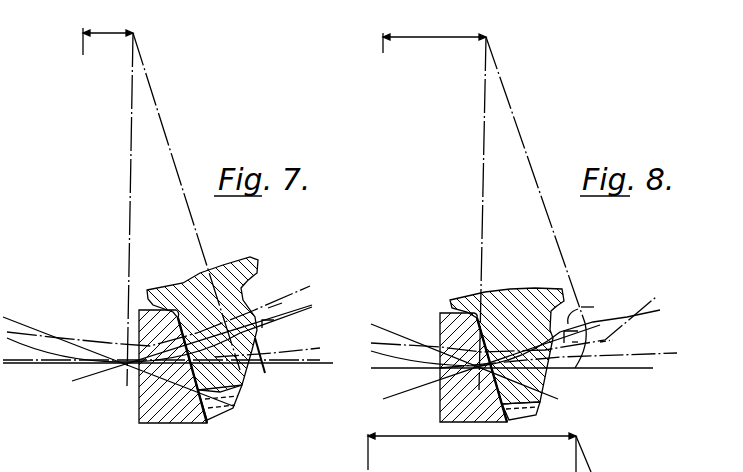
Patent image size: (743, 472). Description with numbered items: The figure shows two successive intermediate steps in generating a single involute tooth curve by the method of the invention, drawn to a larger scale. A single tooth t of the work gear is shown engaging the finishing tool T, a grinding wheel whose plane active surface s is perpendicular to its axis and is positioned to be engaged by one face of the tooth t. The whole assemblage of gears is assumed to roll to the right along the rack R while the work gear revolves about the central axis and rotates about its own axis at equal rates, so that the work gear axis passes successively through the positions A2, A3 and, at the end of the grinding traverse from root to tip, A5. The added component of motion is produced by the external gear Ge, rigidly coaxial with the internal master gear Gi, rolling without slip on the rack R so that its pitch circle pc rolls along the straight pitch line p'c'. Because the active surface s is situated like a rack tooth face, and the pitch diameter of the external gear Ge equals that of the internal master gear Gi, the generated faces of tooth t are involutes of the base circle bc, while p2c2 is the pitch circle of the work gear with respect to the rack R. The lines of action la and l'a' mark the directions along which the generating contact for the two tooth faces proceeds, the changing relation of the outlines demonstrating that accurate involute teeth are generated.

In FIG. 7, the work gear axis position A2 is at (130, 38).
In FIG. 8, the work gear axis position A3 is at (480, 42).
In FIG. 8, the work gear axis position A5 is at (574, 441).
In FIG. 7, the finishing tool T is at (152, 418).
In FIG. 8, the finishing tool T is at (440, 409).
In FIG. 7, the tooth t is at (237, 262).
In FIG. 8, the tooth t is at (518, 292).
In FIG. 7, the active surface s is at (207, 420).
In FIG. 8, the active surface s is at (509, 420).
In FIG. 7, the line of action la is at (243, 408).
In FIG. 8, the line of action la is at (553, 396).
In FIG. 7, the line of action l'a' is at (192, 356).
In FIG. 8, the line of action l'a' is at (489, 362).
In FIG. 7, the pitch circle of the work gear with respect to the rack p2c2 is at (312, 311).
In FIG. 8, the pitch circle of the work gear with respect to the rack p2c2 is at (658, 320).
In FIG. 7, the base circle bc is at (308, 288).
In FIG. 8, the base circle bc is at (643, 300).
In FIG. 7, the pitch circle pc is at (312, 347).
In FIG. 8, the pitch circle pc is at (651, 353).
In FIG. 7, the plane pitch surface p'c' is at (174, 376).
In FIG. 8, the plane pitch surface p'c' is at (527, 381).
In FIG. 7, the external gear Ge is at (272, 306).
In FIG. 8, the external gear Ge is at (586, 305).
In FIG. 7, the internal master gear Gi is at (266, 365).
In FIG. 8, the internal master gear Gi is at (592, 342).
In FIG. 7, the rack R is at (274, 322).
In FIG. 8, the rack R is at (575, 368).